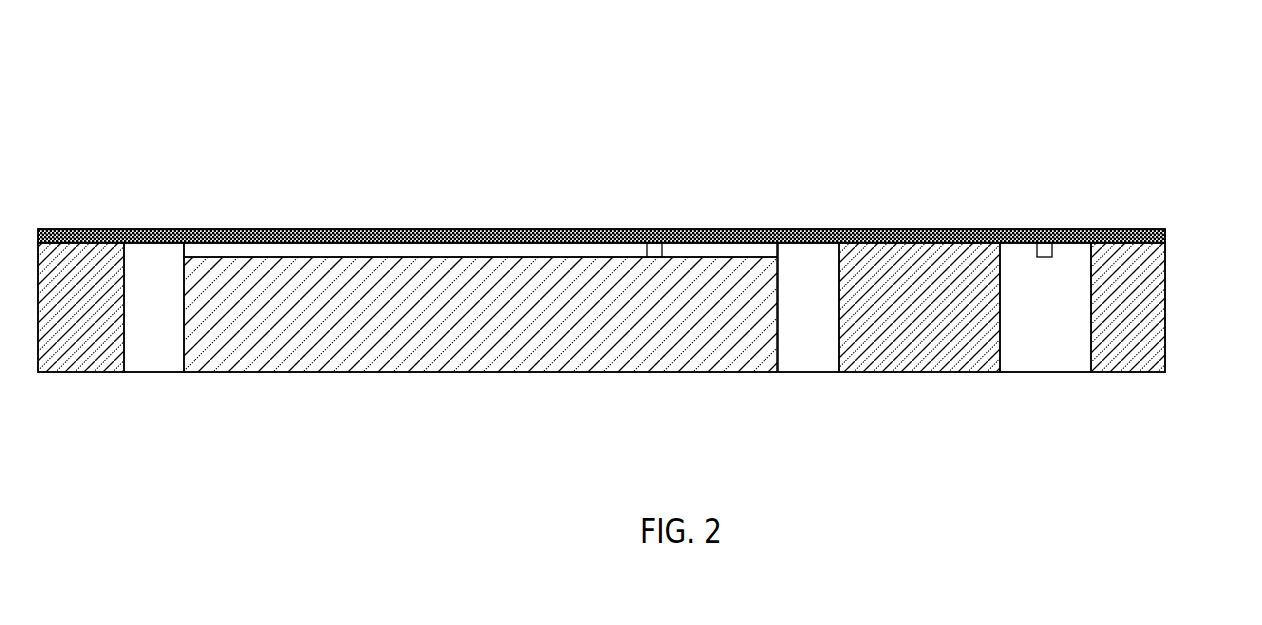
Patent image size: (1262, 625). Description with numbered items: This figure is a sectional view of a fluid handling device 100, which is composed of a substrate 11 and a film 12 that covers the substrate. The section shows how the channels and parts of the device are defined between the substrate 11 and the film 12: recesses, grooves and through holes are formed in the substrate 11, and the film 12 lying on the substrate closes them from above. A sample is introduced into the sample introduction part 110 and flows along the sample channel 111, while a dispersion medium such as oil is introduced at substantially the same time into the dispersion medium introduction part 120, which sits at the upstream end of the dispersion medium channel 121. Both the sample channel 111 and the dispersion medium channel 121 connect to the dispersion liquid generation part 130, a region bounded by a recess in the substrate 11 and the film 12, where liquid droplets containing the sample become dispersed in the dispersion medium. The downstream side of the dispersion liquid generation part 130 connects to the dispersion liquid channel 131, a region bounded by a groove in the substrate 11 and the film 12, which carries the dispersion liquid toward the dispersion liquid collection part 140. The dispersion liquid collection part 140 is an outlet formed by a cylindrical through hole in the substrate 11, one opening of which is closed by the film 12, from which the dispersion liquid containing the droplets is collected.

The fluid handling device 100 is at (1232, 68).
The substrate 11 is at (1160, 282).
The film 12 is at (1165, 232).
The sample introduction part 110 is at (813, 353).
The sample channel 111 is at (727, 247).
The dispersion medium introduction part 120 is at (1057, 360).
The dispersion medium channel 121 is at (1045, 240).
The dispersion liquid generation part 130 is at (652, 242).
The dispersion liquid channel 131 is at (532, 247).
The dispersion liquid collection part 140 is at (155, 255).